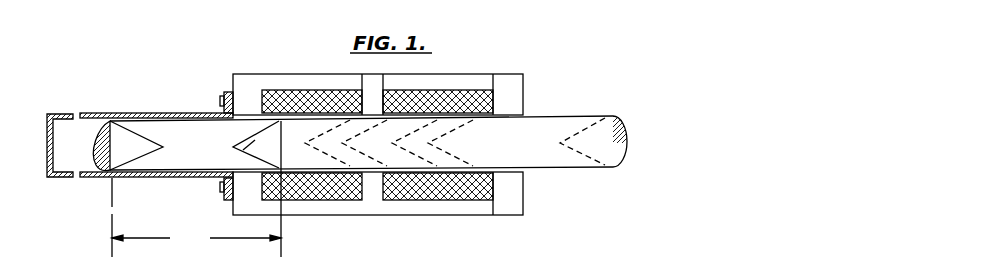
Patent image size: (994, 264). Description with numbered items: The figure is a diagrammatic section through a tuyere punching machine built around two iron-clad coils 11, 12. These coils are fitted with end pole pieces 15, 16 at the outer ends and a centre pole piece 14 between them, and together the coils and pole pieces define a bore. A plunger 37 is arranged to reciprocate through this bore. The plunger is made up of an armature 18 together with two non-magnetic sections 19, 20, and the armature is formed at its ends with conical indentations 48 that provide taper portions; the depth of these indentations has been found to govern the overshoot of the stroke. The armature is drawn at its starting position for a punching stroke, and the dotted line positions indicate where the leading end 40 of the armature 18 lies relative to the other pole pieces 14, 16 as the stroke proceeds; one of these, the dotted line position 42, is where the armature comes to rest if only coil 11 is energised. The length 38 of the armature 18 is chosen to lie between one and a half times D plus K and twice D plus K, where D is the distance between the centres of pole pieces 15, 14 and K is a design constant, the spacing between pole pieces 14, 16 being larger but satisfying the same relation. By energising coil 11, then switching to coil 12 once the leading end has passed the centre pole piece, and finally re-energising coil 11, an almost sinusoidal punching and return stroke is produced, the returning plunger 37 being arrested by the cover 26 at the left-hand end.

The iron-clad coil 11 is at (328, 196).
The iron-clad coil 12 is at (437, 183).
The centre pole piece 14 is at (371, 107).
The end pole piece 15 is at (252, 108).
The end pole piece 16 is at (506, 101).
The armature 18 is at (198, 126).
The non-magnetic section 19 is at (287, 138).
The non-magnetic section 20 is at (110, 121).
The cover 26 is at (54, 180).
The plunger 37 is at (580, 116).
The length of the armature 38 is at (196, 189).
The leading end of the armature 40 is at (273, 120).
The dotted line position 42 is at (372, 162).
The conical indentations 48 is at (137, 140).